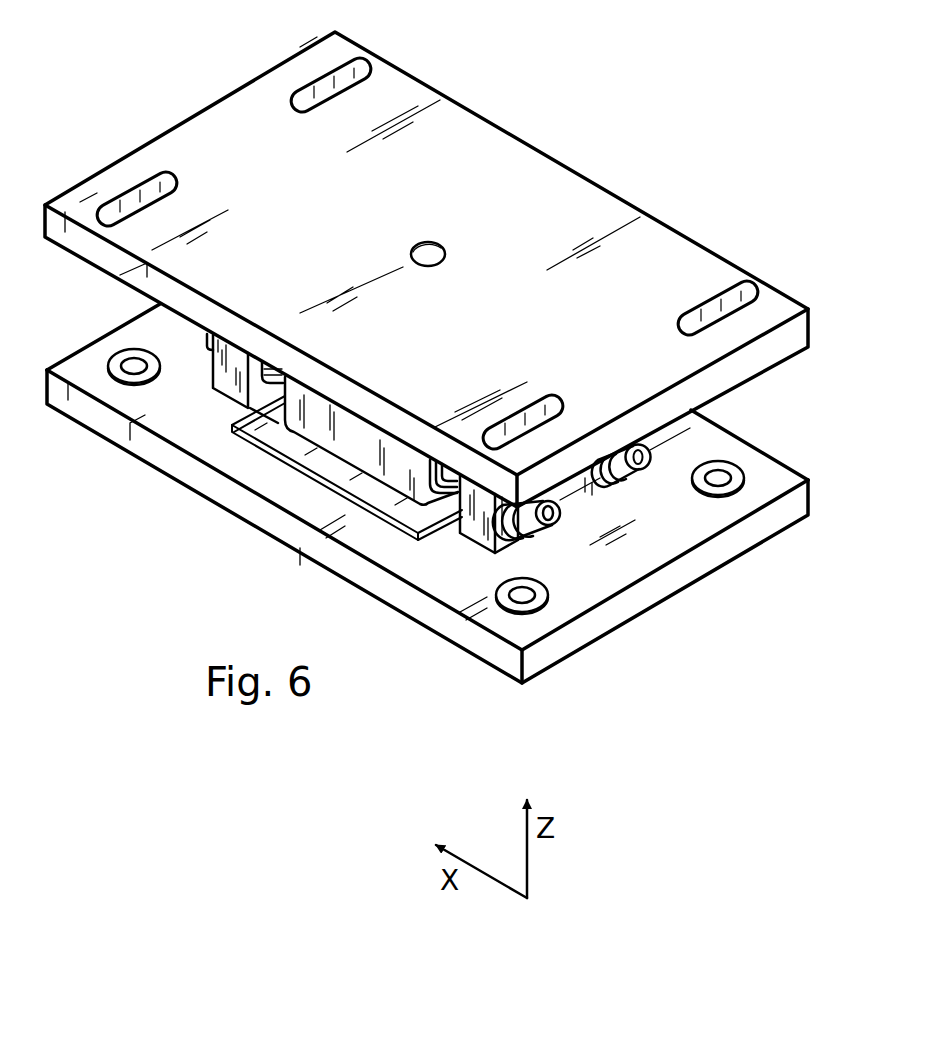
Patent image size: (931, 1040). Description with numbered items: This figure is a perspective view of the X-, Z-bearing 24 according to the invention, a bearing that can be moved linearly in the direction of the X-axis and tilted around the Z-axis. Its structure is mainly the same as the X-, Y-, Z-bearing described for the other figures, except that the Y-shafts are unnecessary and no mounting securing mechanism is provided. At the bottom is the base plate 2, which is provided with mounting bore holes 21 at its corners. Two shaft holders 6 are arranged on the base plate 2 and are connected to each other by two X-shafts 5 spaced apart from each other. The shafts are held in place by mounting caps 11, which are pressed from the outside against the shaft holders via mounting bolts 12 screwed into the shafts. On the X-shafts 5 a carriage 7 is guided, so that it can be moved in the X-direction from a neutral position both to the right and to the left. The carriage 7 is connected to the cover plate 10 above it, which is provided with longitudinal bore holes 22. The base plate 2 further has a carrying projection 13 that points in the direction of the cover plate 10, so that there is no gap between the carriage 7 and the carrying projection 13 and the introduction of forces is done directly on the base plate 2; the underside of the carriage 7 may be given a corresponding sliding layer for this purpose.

The base plate 2 is at (628, 574).
The X-shaft 5 is at (559, 528).
The shaft holder for X-shaft 6 is at (226, 384).
The carriage 7 is at (321, 422).
The cover plate 10 is at (607, 211).
The mounting cap 11 is at (630, 482).
The mounting bolt 12 is at (651, 466).
The carrying projection 13 is at (398, 535).
The mounting bore hole 21 is at (737, 468).
The longitudinal bore hole 22 is at (130, 194).
The X-, Z-bearing 24 is at (603, 166).